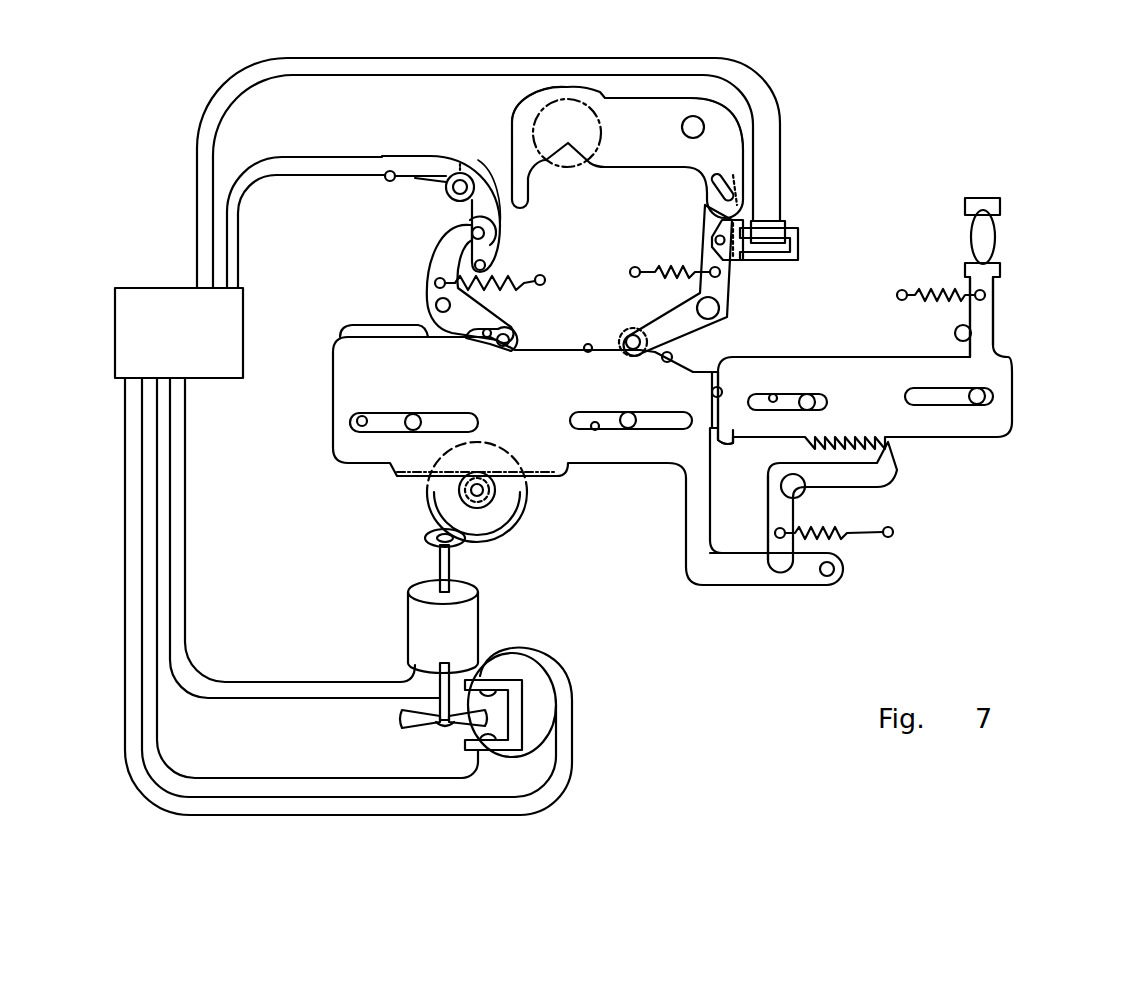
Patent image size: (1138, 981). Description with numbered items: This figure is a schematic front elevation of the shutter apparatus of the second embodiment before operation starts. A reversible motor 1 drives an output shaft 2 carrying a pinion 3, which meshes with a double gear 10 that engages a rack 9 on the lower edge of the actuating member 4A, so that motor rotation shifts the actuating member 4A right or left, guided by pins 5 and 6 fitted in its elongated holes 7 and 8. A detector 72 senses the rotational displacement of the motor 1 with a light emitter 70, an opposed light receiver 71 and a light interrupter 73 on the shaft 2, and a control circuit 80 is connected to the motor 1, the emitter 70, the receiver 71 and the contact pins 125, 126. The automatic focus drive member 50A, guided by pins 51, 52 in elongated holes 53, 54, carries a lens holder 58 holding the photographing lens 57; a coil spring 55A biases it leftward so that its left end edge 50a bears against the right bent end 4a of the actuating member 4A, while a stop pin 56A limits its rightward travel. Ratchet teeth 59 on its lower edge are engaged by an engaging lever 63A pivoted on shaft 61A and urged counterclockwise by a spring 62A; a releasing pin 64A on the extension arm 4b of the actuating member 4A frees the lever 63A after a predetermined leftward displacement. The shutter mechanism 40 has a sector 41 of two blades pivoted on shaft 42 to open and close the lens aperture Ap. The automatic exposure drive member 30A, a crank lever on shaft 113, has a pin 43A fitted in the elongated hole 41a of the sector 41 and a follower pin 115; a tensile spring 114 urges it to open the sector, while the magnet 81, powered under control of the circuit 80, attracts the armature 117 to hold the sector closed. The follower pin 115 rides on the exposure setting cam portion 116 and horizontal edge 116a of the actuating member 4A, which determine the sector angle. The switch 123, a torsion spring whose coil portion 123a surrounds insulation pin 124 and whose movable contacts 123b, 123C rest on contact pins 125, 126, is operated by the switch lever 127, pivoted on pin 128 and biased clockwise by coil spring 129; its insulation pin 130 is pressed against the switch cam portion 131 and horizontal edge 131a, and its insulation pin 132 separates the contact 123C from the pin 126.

The reversible motor 1 is at (408, 628).
The output shaft 2 is at (407, 580).
The pinion 3 is at (420, 535).
The actuating member 4A is at (537, 494).
The right bent end 4a is at (686, 470).
The extension arm 4b is at (718, 586).
The pin 5 is at (430, 413).
The pin 6 is at (628, 428).
The elongated hole 7 is at (353, 415).
The elongated hole 8 is at (593, 428).
The rack 9 is at (407, 483).
The double gear 10 is at (503, 533).
The automatic exposure drive member 30A is at (700, 299).
The shutter mechanism 40 is at (610, 80).
The sector 41 is at (682, 117).
The elongated hole 41a is at (722, 178).
The pivot shaft 42 is at (698, 116).
The pin 43A is at (735, 180).
The automatic focus drive member 50A is at (918, 343).
The left end edge 50a is at (733, 458).
The guide pin 51 is at (815, 396).
The guide pin 52 is at (993, 397).
The elongated hole 53 is at (774, 395).
The elongated hole 54 is at (953, 404).
The coil spring 55A is at (930, 283).
The stop pin 56A is at (955, 333).
The photographing lens 57 is at (995, 233).
The lens holder 58 is at (993, 327).
The ratchet teeth 59 is at (859, 547).
The shaft 61A is at (813, 489).
The spring 62A is at (860, 532).
The engaging lever 63A is at (760, 520).
The releasing pin 64A is at (829, 576).
The light emitter 70 is at (477, 693).
The light receiver 71 is at (513, 723).
The detector 72 is at (443, 745).
The light interrupter 73 is at (413, 727).
The control circuit 80 is at (200, 355).
The magnet 81 is at (770, 220).
The shaft 113 is at (712, 318).
The tensile spring 114 is at (663, 264).
The follower pin 115 is at (632, 333).
The exposure setting cam portion 116 is at (665, 360).
The horizontal edge 116a is at (570, 358).
The armature 117 is at (737, 257).
The switch 123 is at (486, 184).
The coil portion 123a is at (447, 200).
The movable contact 123b is at (402, 150).
The movable contact 123C is at (497, 217).
The insulation pin 124 is at (470, 172).
The contact pin 125 is at (377, 155).
The contact pin 126 is at (487, 267).
The switch lever 127 is at (472, 285).
The pin 128 is at (436, 302).
The coil spring 129 is at (510, 292).
The insulation pin 130 is at (515, 335).
The switch cam portion 131 is at (398, 343).
The horizontal edge 131a is at (354, 325).
The insulation pin 132 is at (500, 238).
The lens aperture Ap is at (547, 105).